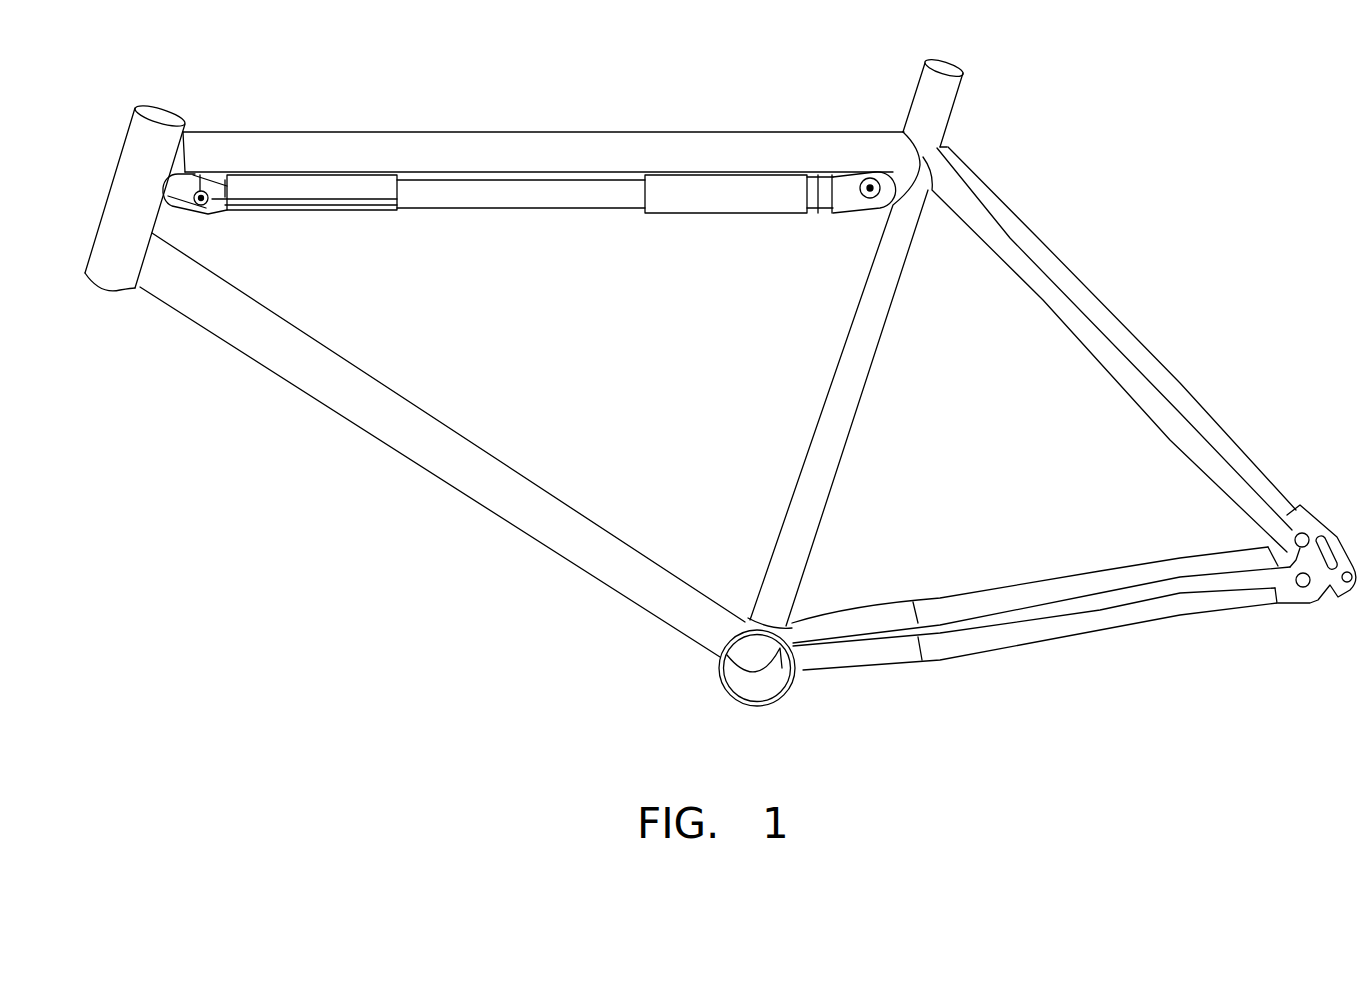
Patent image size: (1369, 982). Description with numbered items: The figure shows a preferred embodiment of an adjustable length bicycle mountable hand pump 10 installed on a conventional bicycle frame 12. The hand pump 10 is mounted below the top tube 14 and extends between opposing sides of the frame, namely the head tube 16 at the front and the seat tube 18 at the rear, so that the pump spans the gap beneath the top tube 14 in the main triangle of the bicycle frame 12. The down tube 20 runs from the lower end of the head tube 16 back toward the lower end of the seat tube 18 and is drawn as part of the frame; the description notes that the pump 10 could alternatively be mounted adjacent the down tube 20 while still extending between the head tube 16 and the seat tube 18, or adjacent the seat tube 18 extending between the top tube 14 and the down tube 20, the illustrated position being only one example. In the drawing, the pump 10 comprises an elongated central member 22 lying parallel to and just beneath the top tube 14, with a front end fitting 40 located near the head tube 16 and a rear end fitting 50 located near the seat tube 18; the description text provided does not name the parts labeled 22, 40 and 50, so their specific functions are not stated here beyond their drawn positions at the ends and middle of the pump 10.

The adjustable length bicycle mountable hand pump 10 is at (529, 244).
The bicycle frame 12 is at (694, 381).
The top tube 14 is at (497, 143).
The head tube 16 is at (117, 187).
The seat tube 18 is at (847, 425).
The down tube 20 is at (430, 487).
The damper rod 22 is at (480, 208).
The front mounting bracket 40 is at (247, 210).
The rear mounting bracket 50 is at (835, 213).